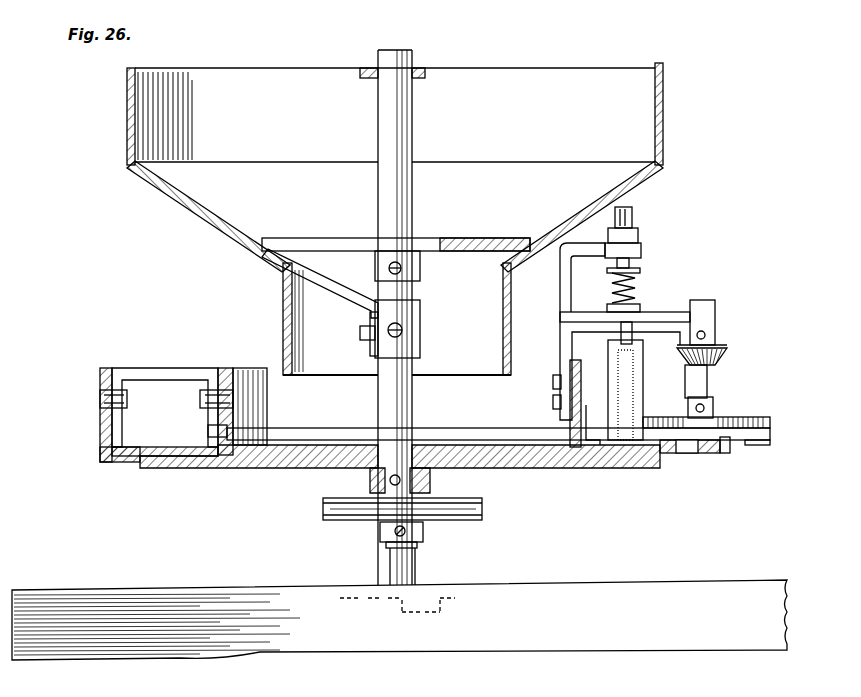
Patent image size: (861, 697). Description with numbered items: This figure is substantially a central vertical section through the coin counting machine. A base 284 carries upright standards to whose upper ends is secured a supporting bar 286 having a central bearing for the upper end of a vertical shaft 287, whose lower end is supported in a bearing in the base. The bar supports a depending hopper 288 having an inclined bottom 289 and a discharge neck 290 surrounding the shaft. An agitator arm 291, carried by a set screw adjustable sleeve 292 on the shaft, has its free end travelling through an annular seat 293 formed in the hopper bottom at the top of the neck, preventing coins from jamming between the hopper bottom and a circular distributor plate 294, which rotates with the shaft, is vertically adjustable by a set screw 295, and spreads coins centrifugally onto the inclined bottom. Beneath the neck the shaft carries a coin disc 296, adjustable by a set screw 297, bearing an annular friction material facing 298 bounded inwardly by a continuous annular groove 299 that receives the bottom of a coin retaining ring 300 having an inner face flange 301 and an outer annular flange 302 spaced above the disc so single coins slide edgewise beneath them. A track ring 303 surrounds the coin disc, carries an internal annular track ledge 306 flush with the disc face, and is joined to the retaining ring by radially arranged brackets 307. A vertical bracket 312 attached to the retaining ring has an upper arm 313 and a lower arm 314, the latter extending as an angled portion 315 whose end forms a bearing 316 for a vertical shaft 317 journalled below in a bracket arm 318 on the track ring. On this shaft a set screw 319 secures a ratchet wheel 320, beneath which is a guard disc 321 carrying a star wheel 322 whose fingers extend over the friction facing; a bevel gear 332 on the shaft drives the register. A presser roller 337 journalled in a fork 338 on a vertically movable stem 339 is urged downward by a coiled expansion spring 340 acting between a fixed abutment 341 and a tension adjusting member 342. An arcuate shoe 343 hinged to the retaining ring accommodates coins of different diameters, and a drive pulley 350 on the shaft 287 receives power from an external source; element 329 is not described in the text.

The base 284 is at (598, 652).
The supporting bar 286 is at (362, 80).
The vertical shaft 287 is at (414, 100).
The hopper 288 is at (664, 95).
The inclined bottom 289 is at (218, 218).
The discharge neck 290 is at (292, 328).
The agitator arm 291 is at (330, 278).
The set screw adjustable sleeve 292 is at (422, 328).
The annular seat 293 is at (528, 240).
The circular distributor plate 294 is at (482, 238).
The set screw 295 is at (402, 270).
The coin disc 296 is at (300, 468).
The set screw 297 is at (432, 482).
The annular friction material facing 298 is at (165, 440).
The continuous annular groove 299 is at (228, 460).
The coin retaining ring 300 is at (260, 360).
The annular inner face flange 301 is at (322, 422).
The outer annular flange 302 is at (208, 428).
The track ring 303 is at (100, 430).
The internal annular track ledge 306 is at (120, 462).
The radially arranged brackets 307 is at (182, 360).
The vertical bracket 312 is at (560, 345).
The upper arm 313 is at (572, 265).
The lower arm 314 is at (590, 304).
The angled portion 315 is at (641, 312).
The bearing 316 is at (724, 315).
The vertical shaft 317 is at (708, 372).
The bracket arm 318 is at (690, 453).
The set screw 319 is at (710, 405).
The ratchet wheel 320 is at (720, 417).
The guard disc 321 is at (752, 446).
The star wheel 322 is at (727, 453).
The arrow 329 is at (776, 438).
The bevel gear 332 is at (722, 347).
The presser roller 337 is at (630, 365).
The fork 338 is at (620, 348).
The vertically movable stem 339 is at (633, 213).
The coiled expansion spring 340 is at (637, 280).
The fixed abutment 341 is at (636, 300).
The tension adjusting member 342 is at (641, 268).
The arcuate shoe 343 is at (592, 406).
The drive pulley 350 is at (402, 541).